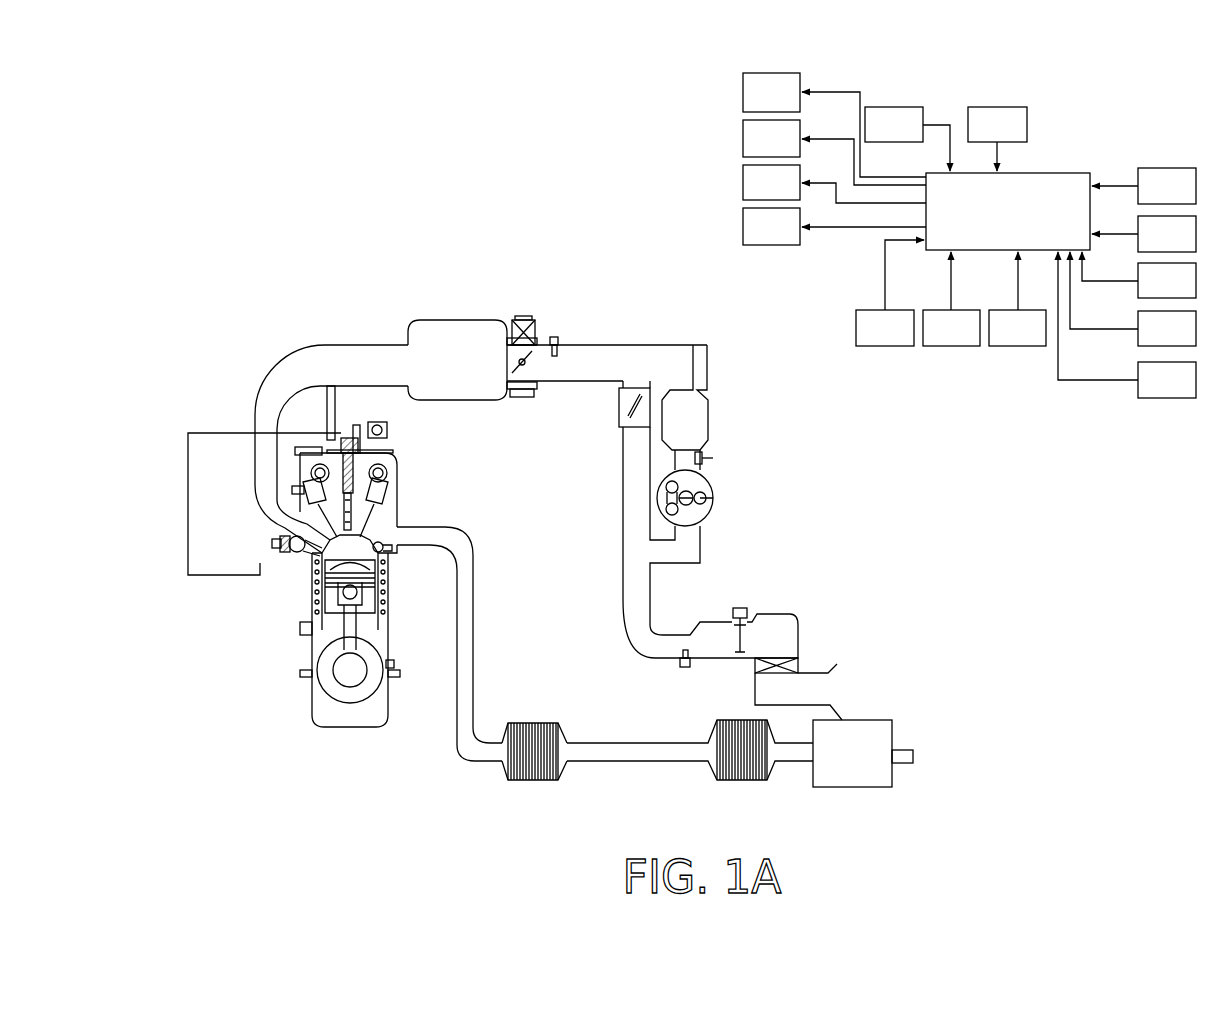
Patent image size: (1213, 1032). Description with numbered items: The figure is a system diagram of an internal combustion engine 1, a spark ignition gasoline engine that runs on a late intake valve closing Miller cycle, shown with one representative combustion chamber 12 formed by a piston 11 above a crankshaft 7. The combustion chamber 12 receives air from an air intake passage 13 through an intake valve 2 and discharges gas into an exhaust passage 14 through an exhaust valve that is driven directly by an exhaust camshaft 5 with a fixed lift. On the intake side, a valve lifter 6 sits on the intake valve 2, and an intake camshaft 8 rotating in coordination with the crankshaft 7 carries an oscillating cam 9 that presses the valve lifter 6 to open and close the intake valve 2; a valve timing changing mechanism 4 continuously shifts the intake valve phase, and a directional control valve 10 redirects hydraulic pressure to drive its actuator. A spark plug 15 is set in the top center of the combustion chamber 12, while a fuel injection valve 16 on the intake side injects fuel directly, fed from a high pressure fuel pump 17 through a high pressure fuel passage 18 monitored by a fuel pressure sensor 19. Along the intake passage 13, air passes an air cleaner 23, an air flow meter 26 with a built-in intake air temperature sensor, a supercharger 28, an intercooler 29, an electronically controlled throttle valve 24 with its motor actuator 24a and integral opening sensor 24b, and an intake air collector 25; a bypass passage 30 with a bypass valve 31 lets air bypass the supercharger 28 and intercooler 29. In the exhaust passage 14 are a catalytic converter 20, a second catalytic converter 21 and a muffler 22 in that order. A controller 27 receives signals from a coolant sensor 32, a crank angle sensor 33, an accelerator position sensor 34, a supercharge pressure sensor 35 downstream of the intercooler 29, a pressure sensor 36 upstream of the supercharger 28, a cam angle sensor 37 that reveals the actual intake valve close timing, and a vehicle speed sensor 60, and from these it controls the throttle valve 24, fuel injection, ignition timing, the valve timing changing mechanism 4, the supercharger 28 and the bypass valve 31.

The internal combustion engine 1 is at (244, 694).
The intake valve 2 is at (272, 543).
The valve timing changing mechanism 4 is at (287, 460).
The exhaust camshaft 5 is at (387, 473).
The valve lifter 6 is at (326, 515).
The crankshaft 7 is at (350, 683).
The intake camshaft 8 is at (307, 467).
The oscillating cam 9 is at (311, 476).
The directional control valve 10 is at (306, 494).
The piston 11 is at (332, 600).
The combustion chamber 12 is at (372, 570).
The air intake passage 13 is at (297, 366).
The exhaust passage 14 is at (474, 648).
The spark plug 15 is at (378, 536).
The fuel injection valve 16 is at (313, 549).
The high pressure fuel pump 17 is at (395, 433).
The high pressure fuel passage 18 is at (188, 435).
The fuel pressure sensor 19 is at (170, 618).
The catalytic converter 20 is at (538, 780).
The second catalytic converter 21 is at (737, 780).
The muffler 22 is at (845, 787).
The air cleaner 23 is at (790, 665).
The electronically controlled throttle valve 24 is at (508, 304).
The actuator 24a is at (537, 328).
The sensor 24b is at (530, 397).
The intake air collector 25 is at (447, 333).
The air flow meter 26 is at (742, 608).
The controller 27 is at (1055, 173).
The supercharger 28 is at (782, 520).
The intercooler 29 is at (711, 390).
The bypass passage 30 is at (623, 495).
The bypass valve 31 is at (659, 387).
The coolant sensor 32 is at (384, 551).
The crank angle sensor 33 is at (394, 663).
The accelerator position sensor 34 is at (1133, 299).
The supercharge pressure sensor 35 is at (572, 335).
The pressure sensor 36 is at (660, 705).
The cam angle sensor 37 is at (890, 293).
The vehicle speed sensor 60 is at (1127, 325).